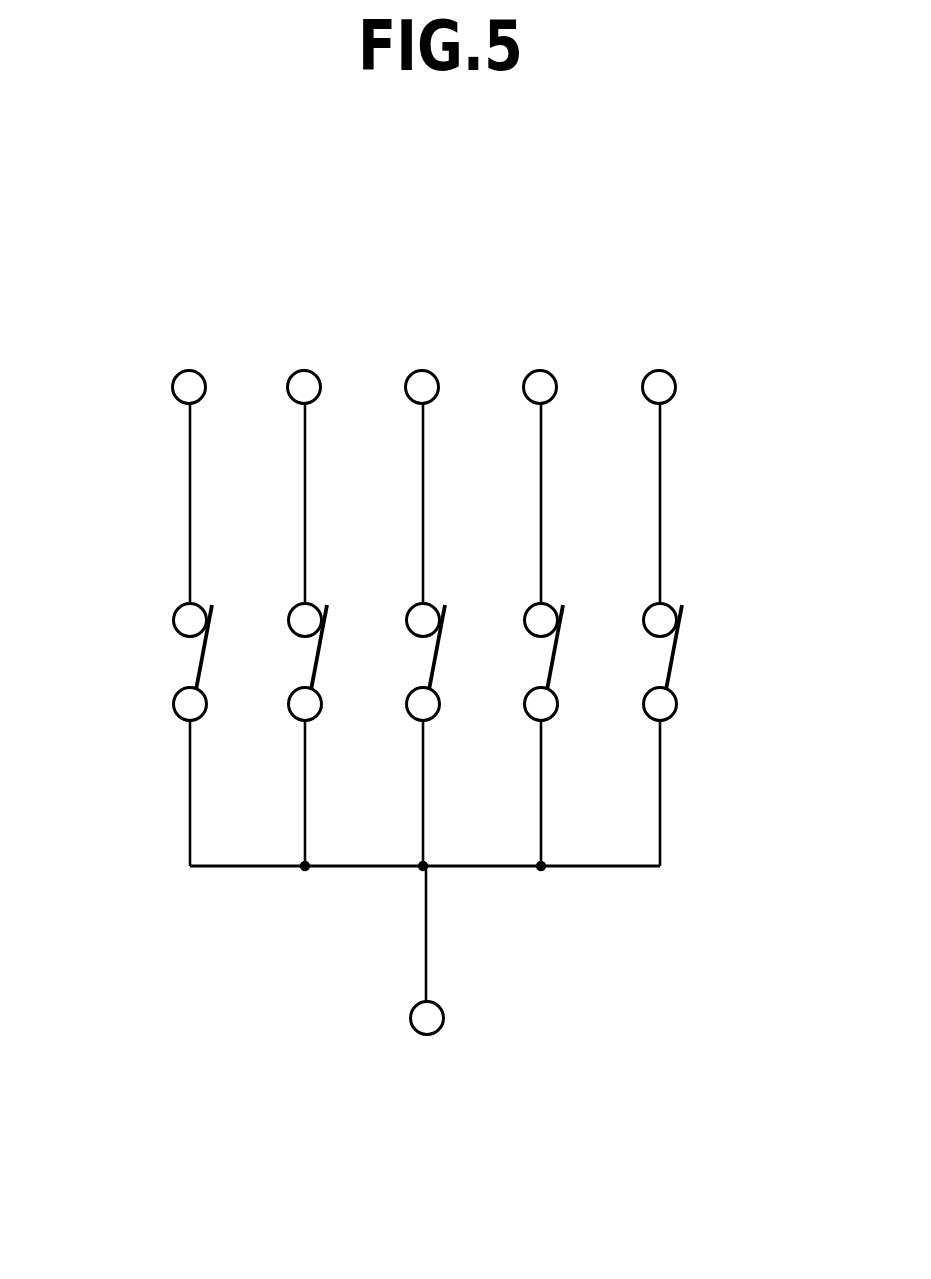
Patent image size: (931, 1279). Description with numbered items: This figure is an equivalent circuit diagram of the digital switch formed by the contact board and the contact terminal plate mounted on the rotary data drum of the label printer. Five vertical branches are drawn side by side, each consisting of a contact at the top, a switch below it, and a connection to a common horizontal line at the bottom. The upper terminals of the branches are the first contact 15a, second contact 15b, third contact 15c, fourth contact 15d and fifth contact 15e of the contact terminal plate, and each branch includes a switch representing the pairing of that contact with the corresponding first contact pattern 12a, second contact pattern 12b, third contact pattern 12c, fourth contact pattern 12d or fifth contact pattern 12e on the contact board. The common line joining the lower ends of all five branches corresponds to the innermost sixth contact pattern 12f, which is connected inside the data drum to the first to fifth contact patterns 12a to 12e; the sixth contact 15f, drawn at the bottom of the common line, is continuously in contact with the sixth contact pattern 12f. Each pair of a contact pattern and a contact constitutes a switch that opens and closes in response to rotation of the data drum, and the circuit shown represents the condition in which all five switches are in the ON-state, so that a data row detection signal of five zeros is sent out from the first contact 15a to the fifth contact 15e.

The first contact pattern 12a is at (662, 797).
The second contact pattern 12b is at (542, 808).
The third contact pattern 12c is at (425, 790).
The fourth contact pattern 12d is at (305, 812).
The fifth contact pattern 12e is at (190, 808).
The sixth contact pattern 12f is at (462, 866).
The first contact 15a is at (659, 370).
The second contact 15b is at (540, 370).
The third contact 15c is at (422, 370).
The fourth contact 15d is at (304, 370).
The fifth contact 15e is at (188, 370).
The sixth contact 15f is at (427, 1035).